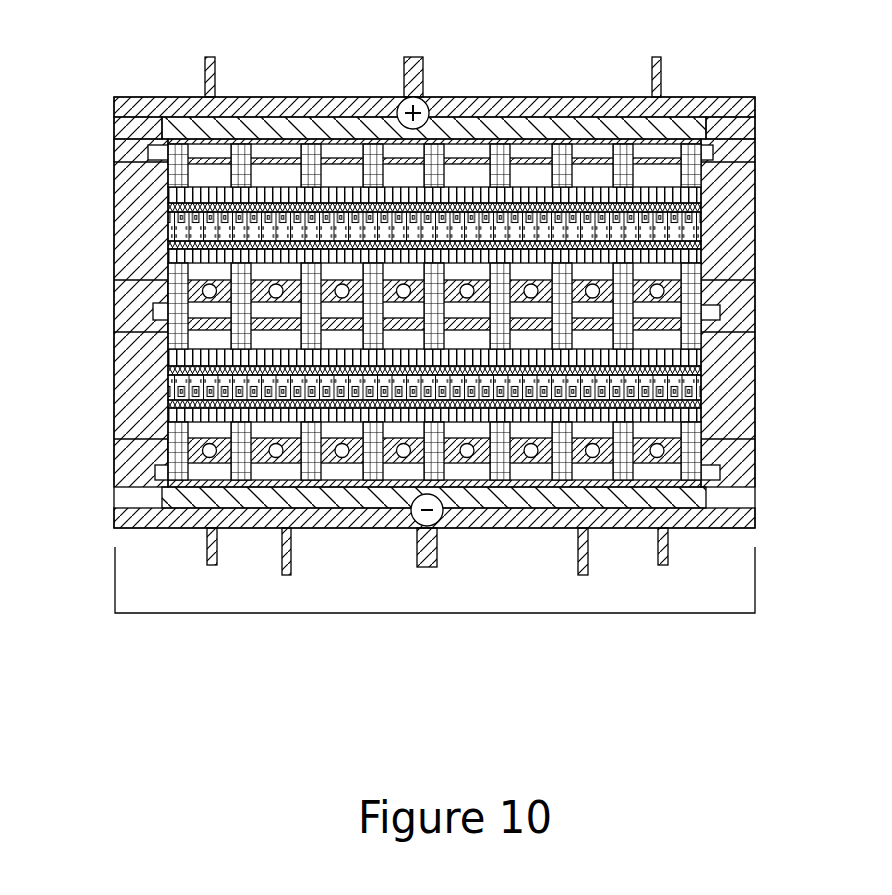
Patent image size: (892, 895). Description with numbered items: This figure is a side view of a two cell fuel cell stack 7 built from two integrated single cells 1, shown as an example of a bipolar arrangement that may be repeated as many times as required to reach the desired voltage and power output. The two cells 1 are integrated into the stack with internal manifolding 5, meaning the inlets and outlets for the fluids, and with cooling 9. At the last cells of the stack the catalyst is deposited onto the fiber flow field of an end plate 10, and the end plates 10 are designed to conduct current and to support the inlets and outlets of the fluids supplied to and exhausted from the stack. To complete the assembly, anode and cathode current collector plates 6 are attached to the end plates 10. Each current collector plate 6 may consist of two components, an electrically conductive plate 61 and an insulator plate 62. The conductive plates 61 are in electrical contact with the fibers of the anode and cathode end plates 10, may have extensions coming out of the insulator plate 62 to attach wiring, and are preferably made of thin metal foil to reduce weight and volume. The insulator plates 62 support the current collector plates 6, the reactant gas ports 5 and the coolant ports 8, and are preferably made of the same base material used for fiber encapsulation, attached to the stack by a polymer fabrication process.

The integrated single cell 1 is at (420, 313).
The internal manifolding 5 is at (204, 72).
The current collector plate 6 is at (110, 97).
The two cell fuel cell stack 7 is at (436, 605).
The coolant port 8 is at (281, 553).
The cooling 9 is at (198, 440).
The end plate 10 is at (113, 155).
The electrically conductive plate 61 is at (400, 76).
The insulator plate 62 is at (538, 96).